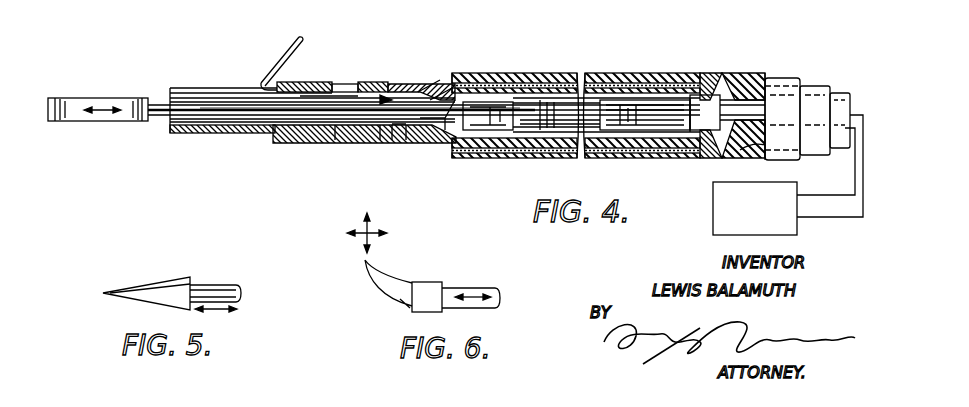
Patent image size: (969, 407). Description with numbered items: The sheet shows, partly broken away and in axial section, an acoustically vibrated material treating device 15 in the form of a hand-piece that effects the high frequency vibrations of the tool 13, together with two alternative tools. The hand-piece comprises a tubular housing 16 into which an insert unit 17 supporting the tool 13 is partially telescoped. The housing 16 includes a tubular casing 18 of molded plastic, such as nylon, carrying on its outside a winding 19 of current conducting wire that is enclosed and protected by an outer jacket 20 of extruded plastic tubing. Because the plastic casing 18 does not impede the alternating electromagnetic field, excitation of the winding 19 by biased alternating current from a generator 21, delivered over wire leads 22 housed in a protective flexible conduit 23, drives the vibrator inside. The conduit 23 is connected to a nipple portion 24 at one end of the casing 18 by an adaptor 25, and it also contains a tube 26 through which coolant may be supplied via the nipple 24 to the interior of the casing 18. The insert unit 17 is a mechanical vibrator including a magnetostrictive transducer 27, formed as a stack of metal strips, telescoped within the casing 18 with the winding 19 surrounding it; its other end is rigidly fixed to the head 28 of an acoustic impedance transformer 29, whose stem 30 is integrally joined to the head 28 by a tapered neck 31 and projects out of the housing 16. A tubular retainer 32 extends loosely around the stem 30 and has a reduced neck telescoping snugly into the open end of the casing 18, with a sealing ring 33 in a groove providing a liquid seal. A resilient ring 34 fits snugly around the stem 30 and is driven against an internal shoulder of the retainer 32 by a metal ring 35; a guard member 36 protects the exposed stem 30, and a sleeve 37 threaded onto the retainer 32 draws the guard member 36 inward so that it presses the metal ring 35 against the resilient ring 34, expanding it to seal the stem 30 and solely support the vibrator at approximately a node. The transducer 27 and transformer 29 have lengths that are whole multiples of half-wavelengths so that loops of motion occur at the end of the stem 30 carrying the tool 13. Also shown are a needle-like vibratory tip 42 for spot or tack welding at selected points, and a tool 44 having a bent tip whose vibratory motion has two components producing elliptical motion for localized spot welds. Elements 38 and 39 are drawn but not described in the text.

In FIG. 4, the tool 13 is at (99, 122).
In FIG. 4, the device 15 is at (723, 53).
In FIG. 4, the tubular housing 16 is at (722, 72).
In FIG. 4, the insert unit 17 is at (222, 113).
In FIG. 4, the tubular casing 18 is at (693, 84).
In FIG. 4, the winding 19 is at (630, 74).
In FIG. 4, the outer jacket 20 is at (558, 74).
In FIG. 4, the generator 21 is at (756, 214).
In FIG. 4, the wire leads 22 is at (858, 152).
In FIG. 4, the protective flexible conduit 23 is at (845, 92).
In FIG. 4, the nipple portion 24 is at (770, 95).
In FIG. 4, the adaptor 25 is at (817, 86).
In FIG. 4, the tube 26 is at (762, 152).
In FIG. 4, the transducer 27 is at (548, 122).
In FIG. 4, the head 28 is at (465, 135).
In FIG. 4, the acoustic impedance transformer 29 is at (498, 80).
In FIG. 4, the stem 30 is at (330, 94).
In FIG. 5, the stem 30 is at (224, 285).
In FIG. 6, the stem 30 is at (474, 288).
In FIG. 4, the tapered neck 31 is at (450, 94).
In FIG. 4, the tubular retainer 32 is at (366, 140).
In FIG. 4, the sealing ring 33 is at (428, 92).
In FIG. 4, the resilient ring 34 is at (392, 140).
In FIG. 4, the metal ring 35 is at (396, 88).
In FIG. 4, the guard member 36 is at (241, 133).
In FIG. 4, the sleeve 37 is at (262, 138).
In FIG. 4, the locking pin 38 is at (284, 60).
In FIG. 4, the sleeve 39 is at (212, 88).
In FIG. 5, the vibratory tip 42 is at (154, 282).
In FIG. 6, the tool 44 is at (386, 280).